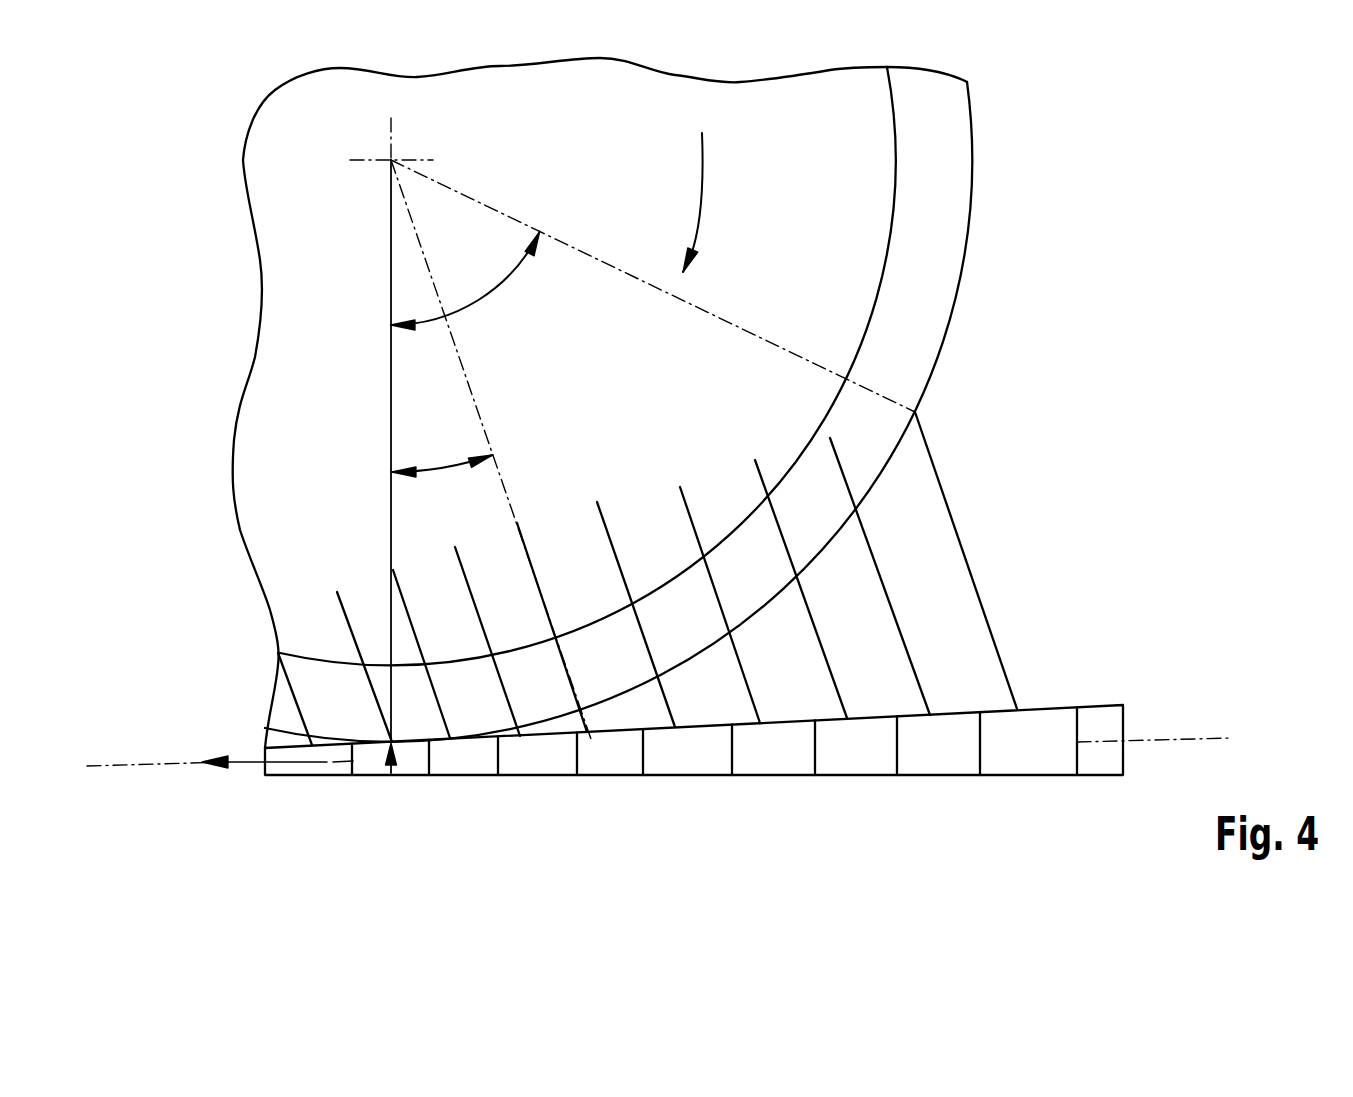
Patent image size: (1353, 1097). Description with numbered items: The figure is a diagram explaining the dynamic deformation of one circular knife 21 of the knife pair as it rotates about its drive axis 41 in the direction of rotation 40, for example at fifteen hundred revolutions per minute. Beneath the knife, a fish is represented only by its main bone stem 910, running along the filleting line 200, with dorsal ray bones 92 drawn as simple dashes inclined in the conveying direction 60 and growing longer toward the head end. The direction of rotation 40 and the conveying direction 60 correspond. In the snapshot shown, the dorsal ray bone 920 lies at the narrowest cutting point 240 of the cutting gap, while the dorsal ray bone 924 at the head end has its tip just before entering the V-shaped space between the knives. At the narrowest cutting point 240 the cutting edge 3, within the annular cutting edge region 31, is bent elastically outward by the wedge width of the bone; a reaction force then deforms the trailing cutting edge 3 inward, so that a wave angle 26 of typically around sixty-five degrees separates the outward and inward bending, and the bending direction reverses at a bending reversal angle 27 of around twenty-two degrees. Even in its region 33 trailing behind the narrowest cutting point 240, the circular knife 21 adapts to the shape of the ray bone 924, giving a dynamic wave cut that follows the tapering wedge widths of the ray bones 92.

The cutting edge 3 is at (780, 597).
The circular knife 21 is at (973, 158).
The wave angle 26 is at (487, 293).
The bending reversal angle 27 is at (443, 466).
The cutting edge region 31 is at (955, 218).
The region trailing behind the narrowest cutting point 33 is at (779, 565).
The direction of rotation 40 is at (702, 193).
The drive axis 41 is at (393, 158).
The conveying direction 60 is at (248, 767).
The dorsal ray bones 92 is at (680, 488).
The dorsal ray bone 920 is at (337, 592).
The dorsal ray bone at the head end 924 is at (937, 462).
The filleting line 200 is at (1168, 738).
The narrowest cutting point 240 is at (391, 777).
The main bone stem 910 is at (555, 777).